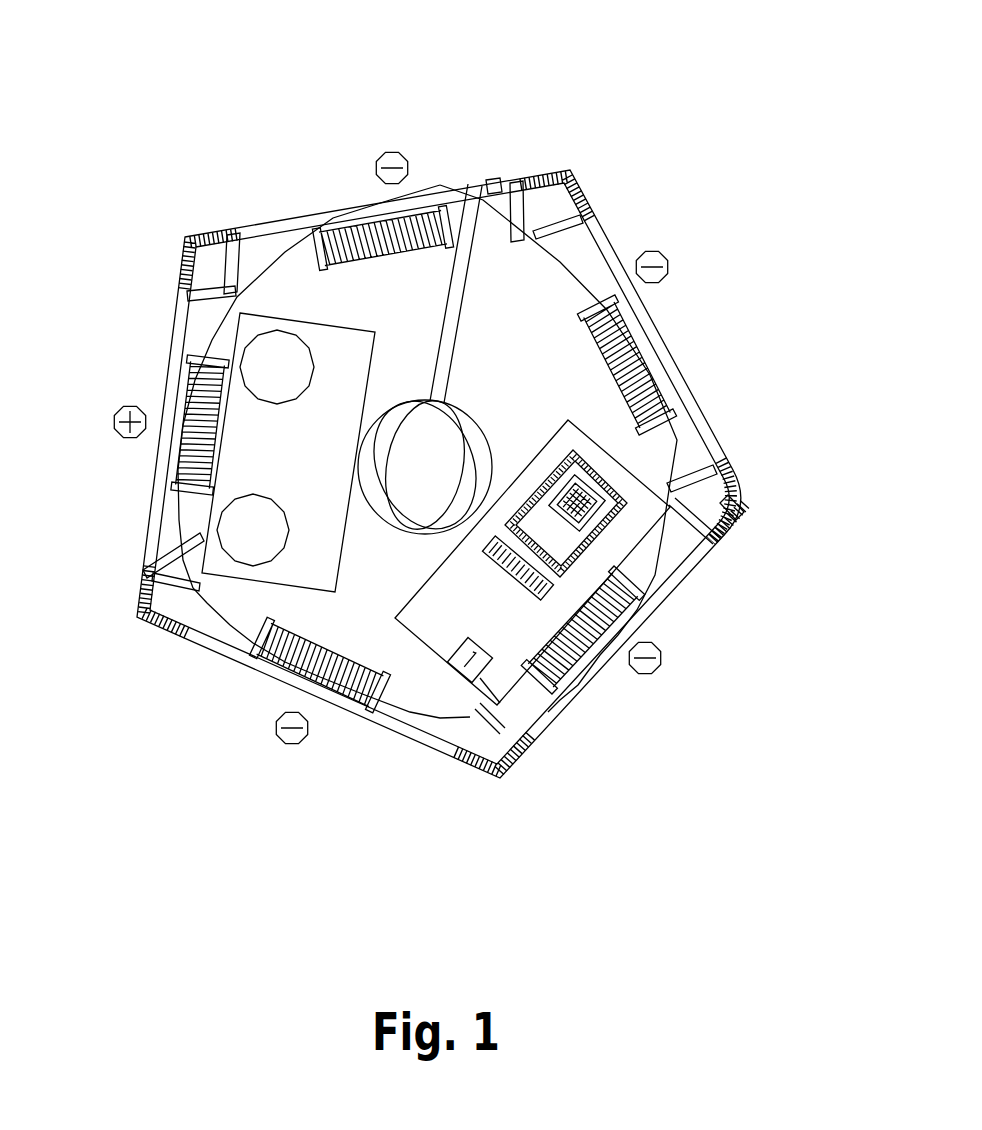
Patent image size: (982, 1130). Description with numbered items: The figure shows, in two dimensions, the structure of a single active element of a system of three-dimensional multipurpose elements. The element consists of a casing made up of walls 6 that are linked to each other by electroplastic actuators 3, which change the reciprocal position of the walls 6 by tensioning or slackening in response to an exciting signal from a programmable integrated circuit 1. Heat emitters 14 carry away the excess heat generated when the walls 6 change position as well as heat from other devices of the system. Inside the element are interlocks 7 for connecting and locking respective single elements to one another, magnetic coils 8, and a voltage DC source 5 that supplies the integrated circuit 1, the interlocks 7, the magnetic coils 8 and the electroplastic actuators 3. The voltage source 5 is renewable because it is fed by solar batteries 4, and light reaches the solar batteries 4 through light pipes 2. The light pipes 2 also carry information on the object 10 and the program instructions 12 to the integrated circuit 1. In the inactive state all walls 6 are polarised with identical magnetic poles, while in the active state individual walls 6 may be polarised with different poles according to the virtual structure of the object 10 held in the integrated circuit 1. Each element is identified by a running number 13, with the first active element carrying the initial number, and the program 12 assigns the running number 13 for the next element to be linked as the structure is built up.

The programmable integrated circuit 1 is at (650, 328).
The light pipes 2 is at (445, 292).
The electroplastic actuators 3 is at (497, 765).
The solar batteries 4 is at (460, 420).
The voltage DC source 5 is at (243, 512).
The walls 6 is at (268, 687).
The interlocks 7 is at (493, 187).
The magnetic coils 8 is at (593, 473).
The object 10 is at (597, 507).
The program instructions 12 is at (528, 585).
The running number 13 is at (462, 680).
The heat emitters 14 is at (740, 523).